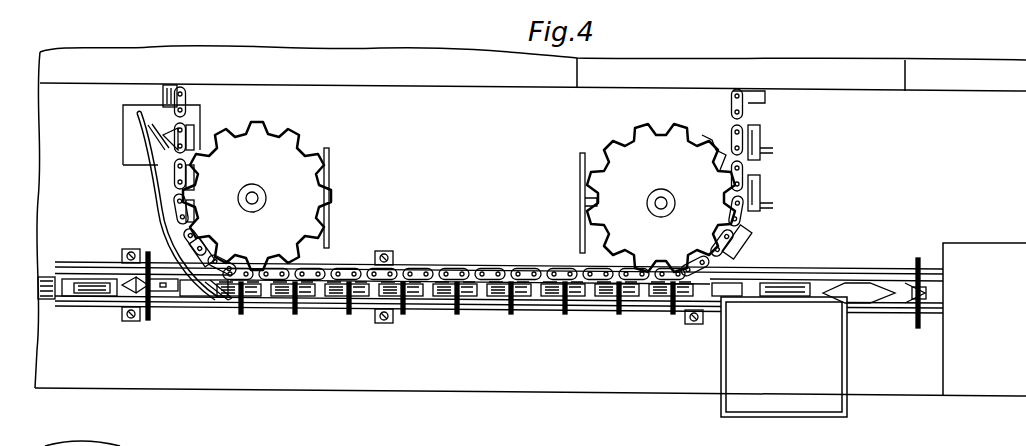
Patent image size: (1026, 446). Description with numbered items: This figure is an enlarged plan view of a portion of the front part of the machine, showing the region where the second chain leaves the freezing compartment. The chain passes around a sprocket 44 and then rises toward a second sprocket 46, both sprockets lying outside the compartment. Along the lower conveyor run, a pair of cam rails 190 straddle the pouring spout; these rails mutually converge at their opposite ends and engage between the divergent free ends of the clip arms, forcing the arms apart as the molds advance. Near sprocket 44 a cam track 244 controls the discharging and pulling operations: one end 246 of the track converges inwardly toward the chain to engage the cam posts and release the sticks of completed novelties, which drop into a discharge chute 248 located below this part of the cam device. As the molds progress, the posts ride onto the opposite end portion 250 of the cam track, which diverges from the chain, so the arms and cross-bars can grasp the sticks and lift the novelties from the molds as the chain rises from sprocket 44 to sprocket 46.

The sprocket 44 is at (307, 189).
The sprocket 46 is at (681, 165).
The cam rails 190 is at (183, 308).
The cam track 244 is at (155, 226).
The end of cam track 246 is at (150, 134).
The discharge chute 248 is at (137, 167).
The opposite end portion of cam track 250 is at (228, 304).